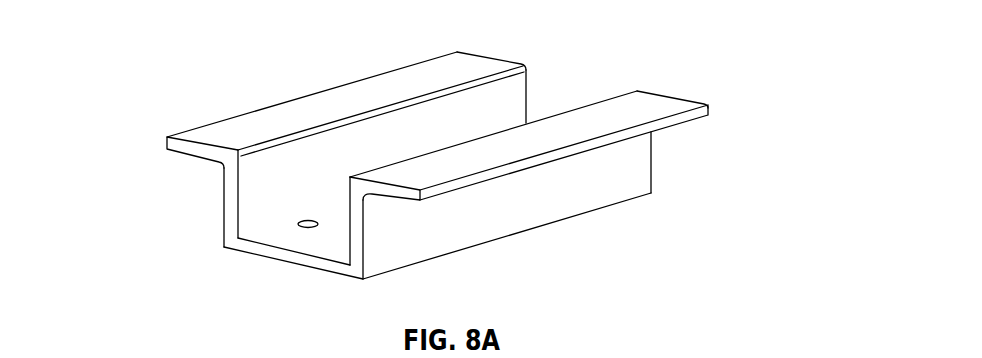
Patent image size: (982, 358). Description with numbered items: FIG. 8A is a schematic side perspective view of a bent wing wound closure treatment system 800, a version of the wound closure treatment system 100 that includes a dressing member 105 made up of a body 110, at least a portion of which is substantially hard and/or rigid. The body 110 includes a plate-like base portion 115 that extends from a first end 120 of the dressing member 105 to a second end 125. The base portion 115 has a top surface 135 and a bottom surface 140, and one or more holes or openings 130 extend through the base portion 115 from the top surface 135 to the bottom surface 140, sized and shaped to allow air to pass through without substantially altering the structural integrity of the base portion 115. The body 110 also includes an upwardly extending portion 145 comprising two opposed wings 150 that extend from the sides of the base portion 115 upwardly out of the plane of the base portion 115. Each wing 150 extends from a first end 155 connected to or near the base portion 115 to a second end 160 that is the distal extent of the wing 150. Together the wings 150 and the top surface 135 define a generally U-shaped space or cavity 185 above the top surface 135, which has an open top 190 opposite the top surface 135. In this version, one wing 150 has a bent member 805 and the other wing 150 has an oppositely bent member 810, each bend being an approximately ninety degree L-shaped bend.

The wound closure treatment system 100 is at (741, 28).
The dressing member 105 is at (749, 59).
The body 110 is at (754, 92).
The base portion 115 is at (270, 235).
The first end 120 is at (151, 124).
The second end 125 is at (509, 48).
The holes or openings 130 is at (300, 232).
The top surface 135 is at (339, 246).
The bottom surface 140 is at (232, 263).
The upwardly extending portion 145 is at (157, 182).
The wings 150 is at (232, 190).
The first end of wing 155 is at (285, 222).
The second end of wing 160 is at (342, 102).
The space or cavity 185 is at (563, 97).
The open top 190 is at (408, 111).
The bent wing wound closure treatment system 800 is at (127, 76).
The bent member 805 is at (228, 128).
The oppositely bent member 810 is at (647, 98).